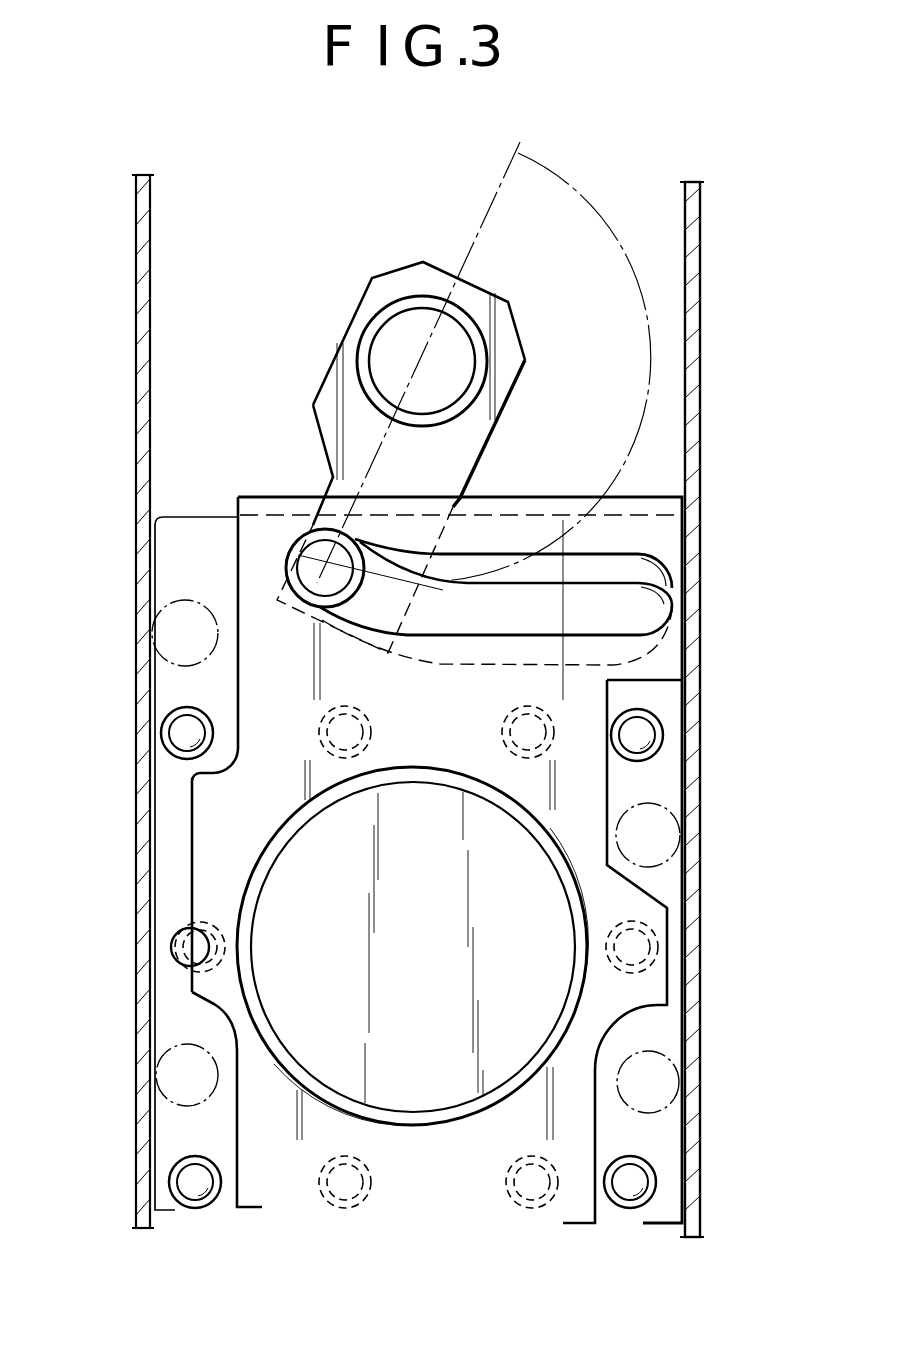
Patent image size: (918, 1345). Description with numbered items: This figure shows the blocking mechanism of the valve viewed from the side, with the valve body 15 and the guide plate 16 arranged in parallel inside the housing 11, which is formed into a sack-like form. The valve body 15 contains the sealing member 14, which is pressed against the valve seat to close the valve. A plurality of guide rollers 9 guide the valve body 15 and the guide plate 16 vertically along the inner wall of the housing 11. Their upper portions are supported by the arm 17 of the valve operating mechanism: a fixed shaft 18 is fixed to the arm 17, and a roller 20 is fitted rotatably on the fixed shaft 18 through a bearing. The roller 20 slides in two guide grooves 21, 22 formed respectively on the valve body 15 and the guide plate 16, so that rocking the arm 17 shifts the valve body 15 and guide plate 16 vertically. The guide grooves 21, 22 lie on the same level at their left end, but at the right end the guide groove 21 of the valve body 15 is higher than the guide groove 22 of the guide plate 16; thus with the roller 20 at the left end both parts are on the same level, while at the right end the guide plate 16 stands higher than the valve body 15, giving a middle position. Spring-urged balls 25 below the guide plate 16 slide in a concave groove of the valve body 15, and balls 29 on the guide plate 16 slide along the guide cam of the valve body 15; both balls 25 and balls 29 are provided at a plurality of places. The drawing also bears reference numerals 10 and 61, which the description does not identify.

The guide rollers 9 is at (172, 600).
The mounting plate assembly 10 is at (126, 685).
The housing 11 is at (137, 307).
The sealing member 14 is at (513, 815).
The valve body 15 is at (213, 855).
The guide plate 16 is at (178, 1014).
The arm 17 is at (380, 500).
The fixed shaft 18 is at (463, 372).
The roller 20 is at (462, 418).
The guide groove 21 is at (665, 580).
The guide groove 22 is at (670, 600).
The balls 25 is at (170, 948).
The balls 29 is at (175, 760).
The hex nut 61 is at (360, 322).